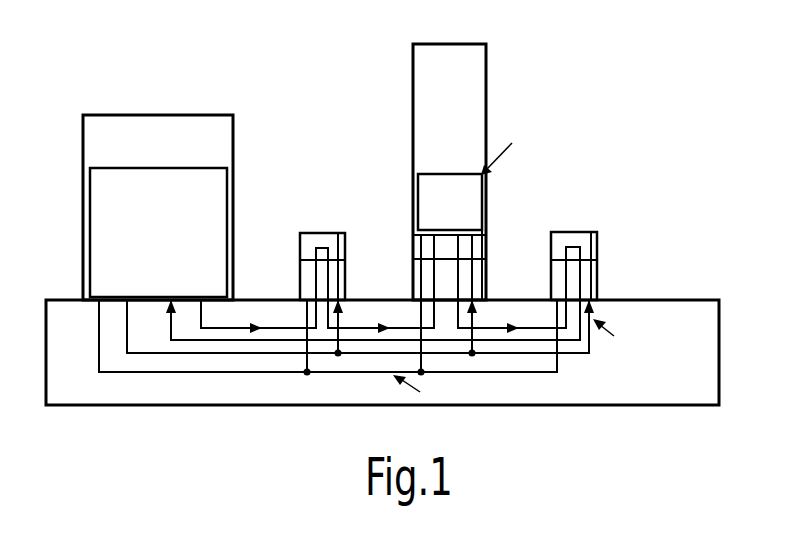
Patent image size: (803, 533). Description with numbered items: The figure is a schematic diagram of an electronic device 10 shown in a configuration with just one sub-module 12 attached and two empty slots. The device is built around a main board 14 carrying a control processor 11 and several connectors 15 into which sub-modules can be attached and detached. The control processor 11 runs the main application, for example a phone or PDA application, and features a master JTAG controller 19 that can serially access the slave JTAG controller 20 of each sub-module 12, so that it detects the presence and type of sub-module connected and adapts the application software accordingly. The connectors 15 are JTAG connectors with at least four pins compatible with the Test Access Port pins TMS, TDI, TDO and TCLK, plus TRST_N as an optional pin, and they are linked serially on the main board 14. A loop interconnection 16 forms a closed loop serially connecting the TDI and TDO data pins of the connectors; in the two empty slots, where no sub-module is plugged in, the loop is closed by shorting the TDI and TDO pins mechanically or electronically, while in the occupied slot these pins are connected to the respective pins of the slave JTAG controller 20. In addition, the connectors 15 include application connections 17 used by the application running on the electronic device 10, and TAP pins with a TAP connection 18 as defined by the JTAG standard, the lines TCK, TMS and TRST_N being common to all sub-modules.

The electronic device 10 is at (634, 59).
The control processor 11 is at (96, 136).
The sub-module 12 is at (482, 68).
The main board 14 is at (719, 312).
The connectors 15 is at (345, 270).
The loop interconnection 16 is at (283, 326).
The application connections 17 is at (240, 374).
The TAP connection 18 is at (589, 353).
The master JTAG controller 19 is at (97, 236).
The slave JTAG controller 20 is at (478, 186).